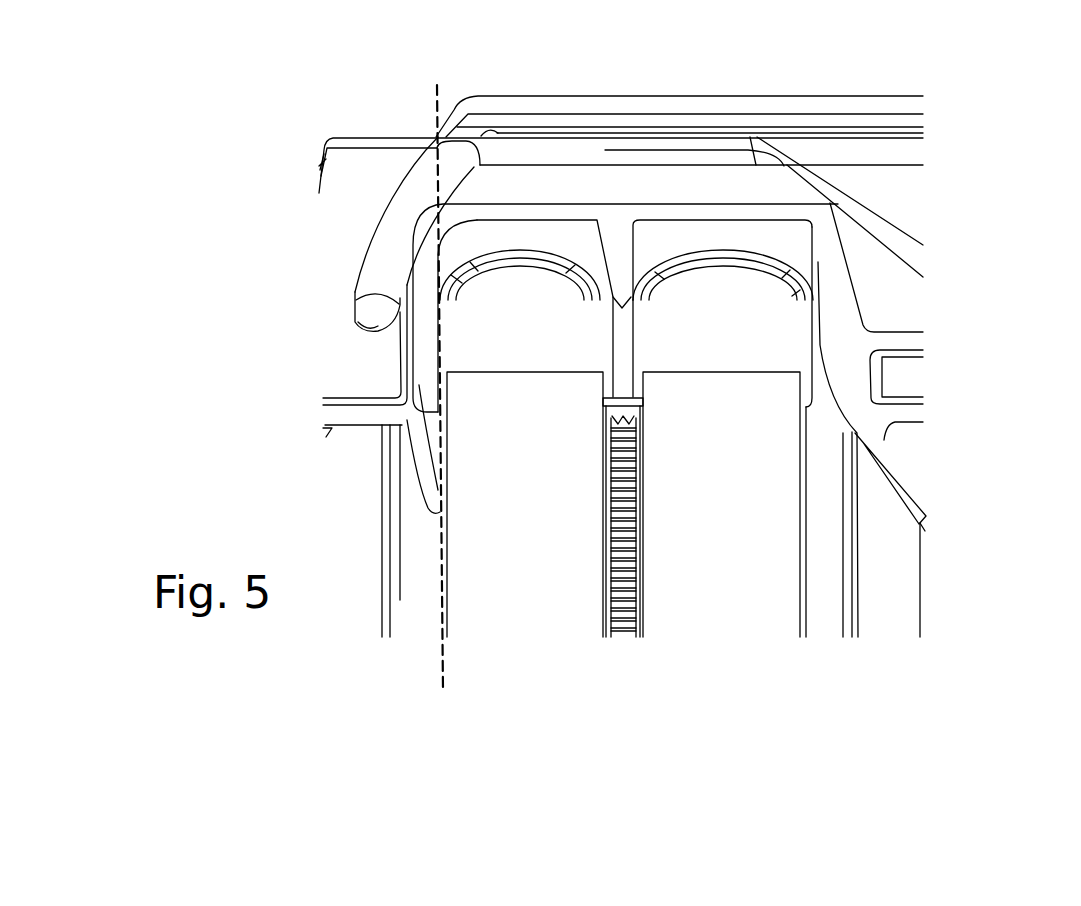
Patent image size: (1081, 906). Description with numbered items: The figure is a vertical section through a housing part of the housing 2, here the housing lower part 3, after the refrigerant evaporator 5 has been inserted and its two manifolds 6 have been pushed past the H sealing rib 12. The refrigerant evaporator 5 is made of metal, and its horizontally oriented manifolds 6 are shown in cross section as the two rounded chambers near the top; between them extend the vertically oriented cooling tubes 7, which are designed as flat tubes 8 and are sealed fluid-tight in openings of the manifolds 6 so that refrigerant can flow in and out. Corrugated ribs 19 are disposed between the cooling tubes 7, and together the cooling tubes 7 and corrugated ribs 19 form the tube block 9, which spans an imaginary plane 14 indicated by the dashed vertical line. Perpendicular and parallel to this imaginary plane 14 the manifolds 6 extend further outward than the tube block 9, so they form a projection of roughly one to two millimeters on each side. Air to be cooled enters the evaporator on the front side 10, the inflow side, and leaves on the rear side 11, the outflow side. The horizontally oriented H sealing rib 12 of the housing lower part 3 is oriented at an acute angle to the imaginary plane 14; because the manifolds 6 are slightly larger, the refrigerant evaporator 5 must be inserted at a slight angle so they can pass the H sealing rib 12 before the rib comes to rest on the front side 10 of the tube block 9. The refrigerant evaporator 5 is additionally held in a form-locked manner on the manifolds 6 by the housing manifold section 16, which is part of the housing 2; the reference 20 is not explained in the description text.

The housing 2 is at (689, 372).
The housing lower part 3 is at (877, 572).
The refrigerant evaporator 5 is at (609, 567).
The manifold 6 is at (497, 325).
The cooling tube 7 is at (609, 504).
The flat tube 8 is at (488, 553).
The tube block 9 is at (609, 550).
The front side 10 is at (440, 563).
The rear side 11 is at (807, 572).
The H sealing rib 12 is at (427, 472).
The imaginary plane 14 is at (433, 117).
The housing manifold section 16 is at (622, 216).
The corrugated rib 19 is at (630, 585).
The plug insert 20 is at (609, 567).